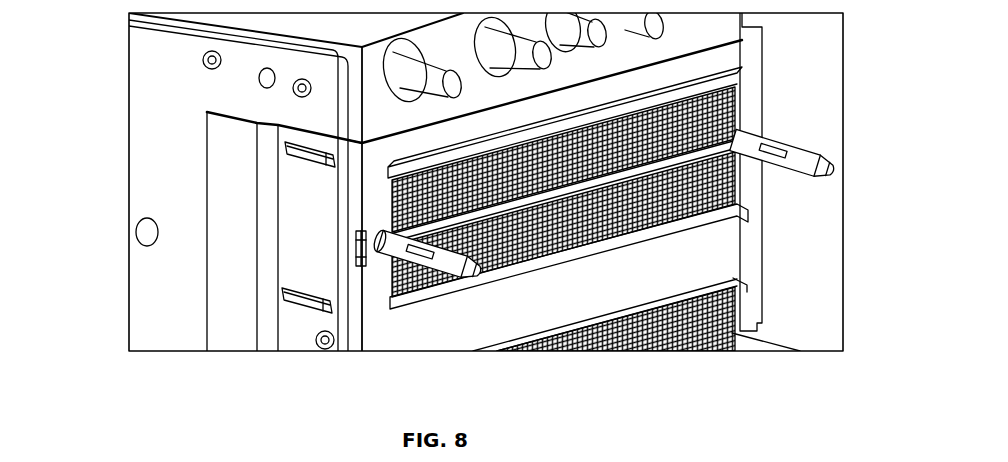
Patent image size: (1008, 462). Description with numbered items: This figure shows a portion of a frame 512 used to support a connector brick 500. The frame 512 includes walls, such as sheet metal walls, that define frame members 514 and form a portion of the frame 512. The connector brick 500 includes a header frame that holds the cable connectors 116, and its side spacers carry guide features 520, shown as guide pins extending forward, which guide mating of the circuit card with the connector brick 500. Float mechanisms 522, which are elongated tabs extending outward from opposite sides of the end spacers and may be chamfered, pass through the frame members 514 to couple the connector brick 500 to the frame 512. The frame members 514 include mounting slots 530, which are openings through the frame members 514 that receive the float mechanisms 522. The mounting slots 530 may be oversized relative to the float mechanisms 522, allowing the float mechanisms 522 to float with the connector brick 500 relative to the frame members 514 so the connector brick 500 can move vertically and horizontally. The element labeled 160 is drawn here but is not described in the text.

The connector brick 500 is at (612, 204).
The frame 512 is at (150, 86).
The frame member 514 is at (148, 323).
The cable connector 116 is at (722, 183).
The guide shelf 160 is at (743, 210).
The guide feature 520 is at (442, 258).
The float mechanism 522 is at (305, 151).
The mounting slot 530 is at (282, 143).